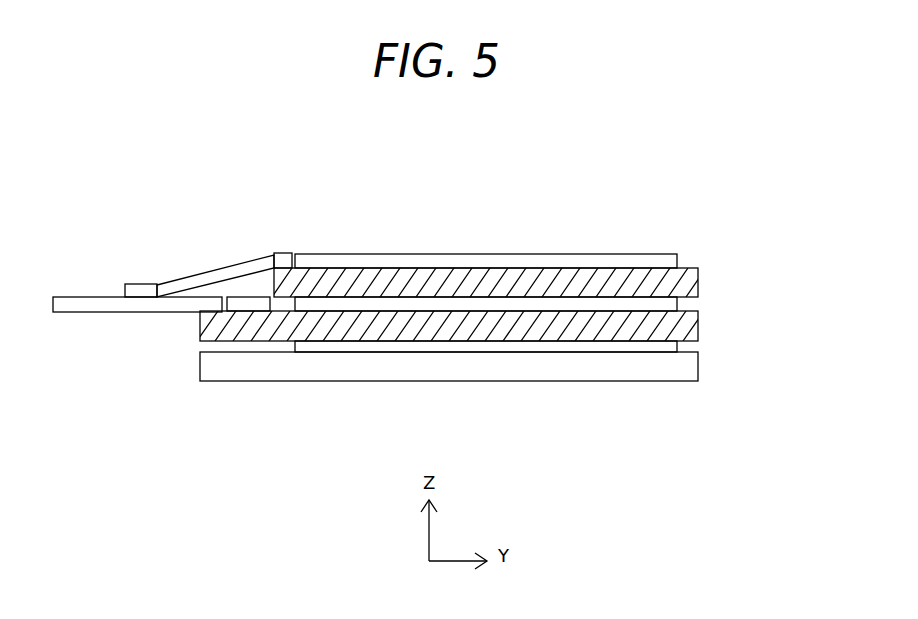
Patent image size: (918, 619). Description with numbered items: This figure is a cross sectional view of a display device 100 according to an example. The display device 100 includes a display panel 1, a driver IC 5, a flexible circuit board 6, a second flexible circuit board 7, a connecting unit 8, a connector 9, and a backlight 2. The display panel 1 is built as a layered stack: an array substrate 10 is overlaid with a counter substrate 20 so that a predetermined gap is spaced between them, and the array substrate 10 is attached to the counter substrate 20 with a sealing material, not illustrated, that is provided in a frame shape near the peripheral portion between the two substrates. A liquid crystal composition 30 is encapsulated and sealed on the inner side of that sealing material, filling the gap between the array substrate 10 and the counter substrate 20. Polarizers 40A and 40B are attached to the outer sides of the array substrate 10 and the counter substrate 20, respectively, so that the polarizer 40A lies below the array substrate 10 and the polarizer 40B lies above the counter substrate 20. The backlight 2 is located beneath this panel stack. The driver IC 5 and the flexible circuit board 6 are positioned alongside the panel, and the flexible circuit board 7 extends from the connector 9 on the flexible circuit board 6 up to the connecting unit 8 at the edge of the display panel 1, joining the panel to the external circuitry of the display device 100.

The display device 100 is at (481, 157).
The display panel 1 is at (837, 258).
The backlight 2 is at (280, 370).
The driver IC 5 is at (240, 305).
The flexible circuit board 6 is at (87, 304).
The flexible circuit board 7 is at (222, 268).
The connecting unit 8 is at (285, 252).
The connector 9 is at (140, 283).
The array substrate 10 is at (698, 327).
The counter substrate 20 is at (698, 283).
The liquid crystal composition 30 is at (677, 301).
The polarizer 40A is at (677, 347).
The polarizer 40B is at (678, 263).